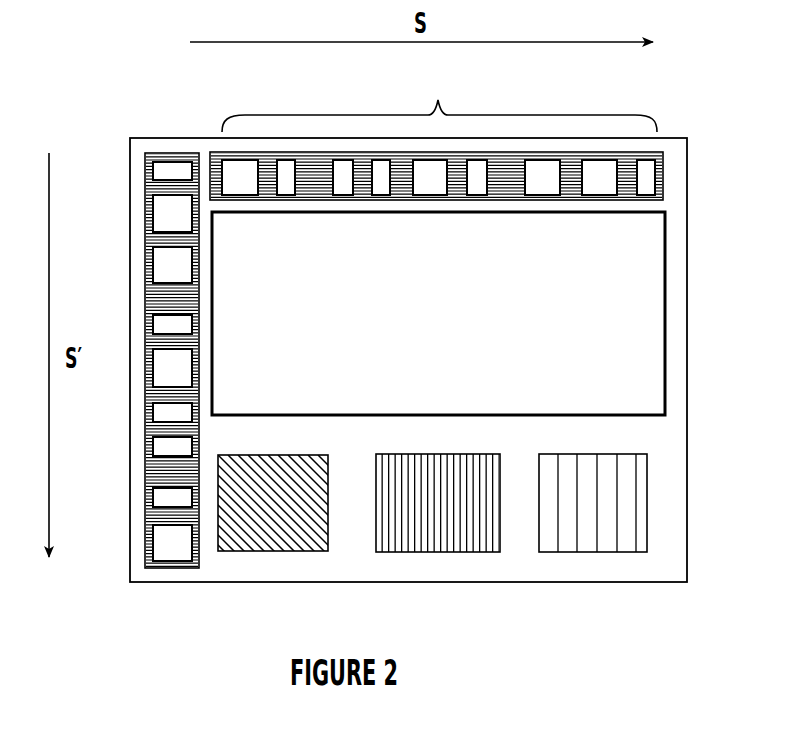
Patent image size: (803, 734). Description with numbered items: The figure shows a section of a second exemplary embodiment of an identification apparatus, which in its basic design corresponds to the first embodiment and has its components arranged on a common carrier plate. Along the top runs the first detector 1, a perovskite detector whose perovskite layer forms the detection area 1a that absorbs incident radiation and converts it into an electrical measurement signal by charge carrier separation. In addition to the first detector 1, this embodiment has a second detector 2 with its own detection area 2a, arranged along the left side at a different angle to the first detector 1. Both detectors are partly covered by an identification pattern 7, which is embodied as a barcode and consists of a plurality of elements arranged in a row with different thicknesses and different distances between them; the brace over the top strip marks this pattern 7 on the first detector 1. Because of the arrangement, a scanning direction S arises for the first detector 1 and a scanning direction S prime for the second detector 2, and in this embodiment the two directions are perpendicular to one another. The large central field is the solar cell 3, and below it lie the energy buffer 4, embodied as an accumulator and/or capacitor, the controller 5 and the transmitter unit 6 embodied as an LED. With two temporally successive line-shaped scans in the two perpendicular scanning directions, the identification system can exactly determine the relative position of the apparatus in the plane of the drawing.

The first detector 1 is at (207, 160).
The detection area 1a is at (252, 152).
The second detector 2 is at (152, 184).
The detection area of the second detector 2a is at (150, 223).
The solar cell 3 is at (647, 280).
The energy buffer 4 is at (285, 551).
The controller 5 is at (452, 553).
The transmitter unit 6 is at (607, 553).
The identification pattern 7 is at (439, 99).